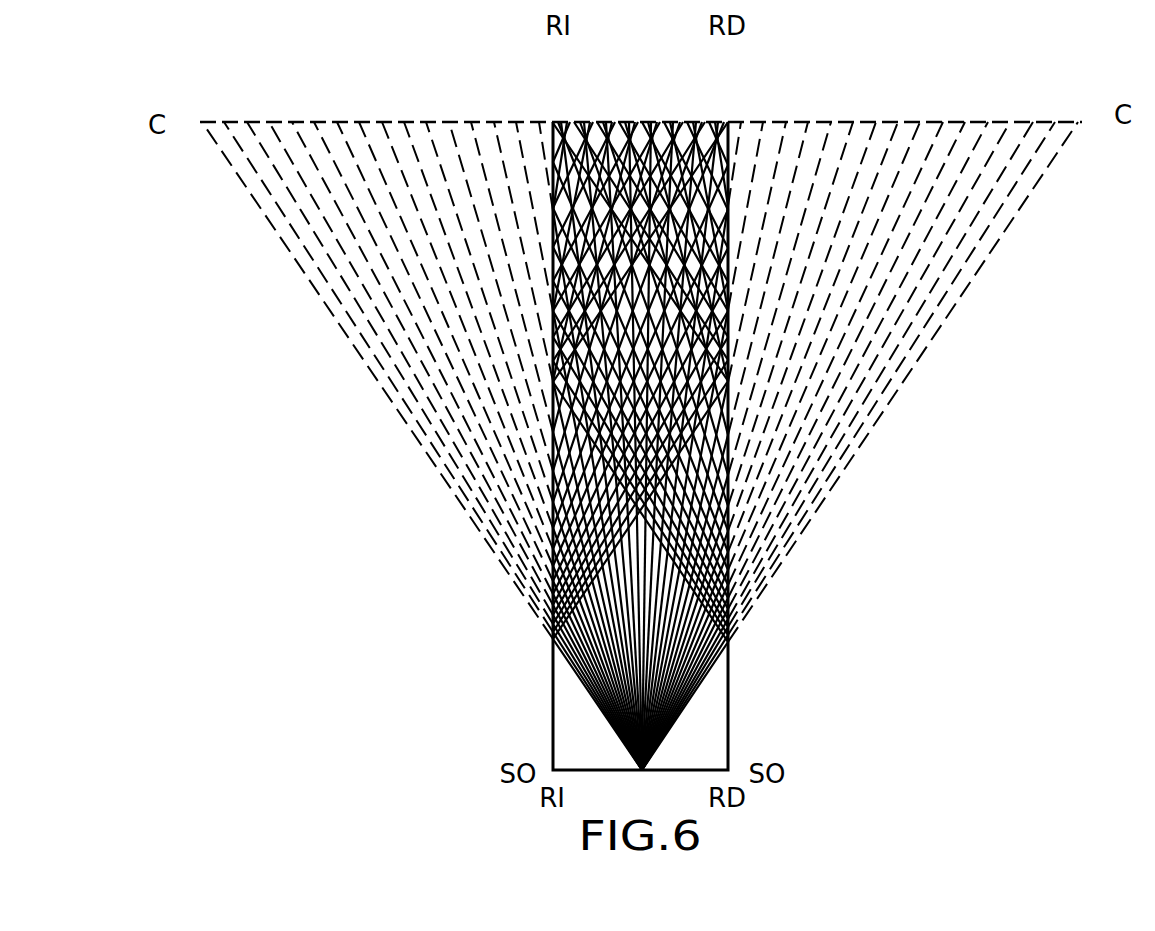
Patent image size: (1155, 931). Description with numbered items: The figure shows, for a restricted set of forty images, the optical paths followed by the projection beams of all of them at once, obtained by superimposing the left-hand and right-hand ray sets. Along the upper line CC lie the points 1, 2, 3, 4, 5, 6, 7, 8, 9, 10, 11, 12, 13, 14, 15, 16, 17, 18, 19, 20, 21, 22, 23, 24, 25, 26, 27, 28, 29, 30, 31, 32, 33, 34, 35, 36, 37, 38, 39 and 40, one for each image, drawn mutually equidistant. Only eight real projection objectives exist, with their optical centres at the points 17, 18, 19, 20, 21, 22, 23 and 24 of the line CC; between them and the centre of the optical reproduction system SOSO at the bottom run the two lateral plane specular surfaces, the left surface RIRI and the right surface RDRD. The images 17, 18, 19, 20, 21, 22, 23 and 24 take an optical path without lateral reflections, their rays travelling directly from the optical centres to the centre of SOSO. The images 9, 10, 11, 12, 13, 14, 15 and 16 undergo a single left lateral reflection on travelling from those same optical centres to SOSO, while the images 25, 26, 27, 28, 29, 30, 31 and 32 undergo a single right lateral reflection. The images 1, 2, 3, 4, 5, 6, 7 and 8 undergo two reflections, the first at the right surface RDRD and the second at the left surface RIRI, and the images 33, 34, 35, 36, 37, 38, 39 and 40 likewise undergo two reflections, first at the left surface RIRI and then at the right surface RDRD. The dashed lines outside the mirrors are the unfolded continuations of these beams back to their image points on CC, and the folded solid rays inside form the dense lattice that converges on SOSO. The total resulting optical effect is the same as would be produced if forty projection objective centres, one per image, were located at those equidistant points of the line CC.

The image 1 is at (462, 431).
The image 2 is at (473, 431).
The image 3 is at (484, 431).
The image 4 is at (495, 431).
The image 5 is at (507, 431).
The image 6 is at (518, 431).
The image 7 is at (529, 431).
The image 8 is at (540, 431).
The image 9 is at (550, 431).
The image 10 is at (547, 431).
The image 11 is at (426, 120).
The image 12 is at (547, 431).
The image 13 is at (471, 120).
The image 14 is at (562, 431).
The image 15 is at (516, 120).
The image 16 is at (584, 431).
The real projection objective optical centre 17 is at (561, 120).
The real projection objective optical centre 18 is at (607, 431).
The real projection objective optical centre 19 is at (606, 120).
The real projection objective optical centre 20 is at (629, 431).
The real projection objective optical centre 21 is at (651, 120).
The real projection objective optical centre 22 is at (663, 431).
The real projection objective optical centre 23 is at (696, 120).
The real projection objective optical centre 24 is at (686, 431).
The image 25 is at (741, 120).
The image 26 is at (708, 431).
The image 27 is at (786, 120).
The image 28 is at (731, 431).
The image 29 is at (831, 120).
The image 30 is at (734, 431).
The image 31 is at (876, 120).
The image 32 is at (734, 431).
The image 33 is at (920, 120).
The image 34 is at (754, 431).
The image 35 is at (965, 120).
The image 36 is at (776, 431).
The image 37 is at (1010, 120).
The image 38 is at (799, 431).
The image 39 is at (1055, 120).
The image 40 is at (821, 431).